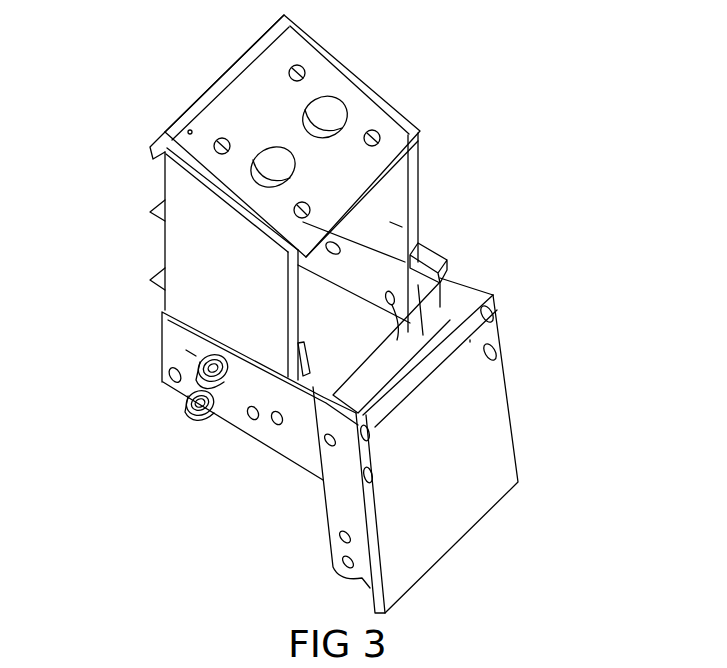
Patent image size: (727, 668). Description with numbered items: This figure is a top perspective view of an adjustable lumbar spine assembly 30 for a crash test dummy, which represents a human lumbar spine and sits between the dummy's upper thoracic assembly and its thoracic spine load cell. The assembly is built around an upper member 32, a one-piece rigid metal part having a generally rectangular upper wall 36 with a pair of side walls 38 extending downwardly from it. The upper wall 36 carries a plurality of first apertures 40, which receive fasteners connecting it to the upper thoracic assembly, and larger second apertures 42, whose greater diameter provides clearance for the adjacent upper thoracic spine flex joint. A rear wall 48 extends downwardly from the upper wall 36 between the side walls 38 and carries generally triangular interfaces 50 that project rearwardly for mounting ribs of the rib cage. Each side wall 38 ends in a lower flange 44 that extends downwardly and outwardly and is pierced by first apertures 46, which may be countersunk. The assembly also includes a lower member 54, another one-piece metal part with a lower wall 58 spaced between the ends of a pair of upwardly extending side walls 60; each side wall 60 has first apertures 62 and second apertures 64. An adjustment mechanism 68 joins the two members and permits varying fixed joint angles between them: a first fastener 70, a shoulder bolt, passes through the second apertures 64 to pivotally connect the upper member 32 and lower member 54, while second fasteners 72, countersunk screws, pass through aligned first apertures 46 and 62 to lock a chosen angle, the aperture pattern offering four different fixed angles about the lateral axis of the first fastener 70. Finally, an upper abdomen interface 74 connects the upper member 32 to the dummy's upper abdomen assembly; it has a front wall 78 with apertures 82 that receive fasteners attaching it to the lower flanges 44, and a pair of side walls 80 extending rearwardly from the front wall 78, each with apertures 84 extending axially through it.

The adjustable lumbar spine assembly 30 is at (112, 128).
The upper member 32 is at (418, 174).
The upper wall 36 is at (322, 72).
The side walls 38 is at (400, 111).
The first apertures 40 is at (294, 66).
The second apertures 42 is at (267, 149).
The lower flange 44 is at (433, 256).
The first apertures 46 is at (175, 373).
The rear wall 48 is at (238, 67).
The interfaces 50 is at (165, 207).
The lower member 54 is at (390, 226).
The lower wall 58 is at (395, 362).
The side walls 60 is at (452, 286).
The first apertures 62 is at (375, 343).
The second apertures 64 is at (340, 252).
The adjustment mechanism 68 is at (192, 354).
The first fastener 70 is at (214, 417).
The second fasteners 72 is at (187, 403).
The upper abdomen interface 74 is at (512, 447).
The front wall 78 is at (446, 512).
The side walls 80 is at (468, 302).
The apertures 82 is at (496, 350).
The apertures 84 is at (328, 448).